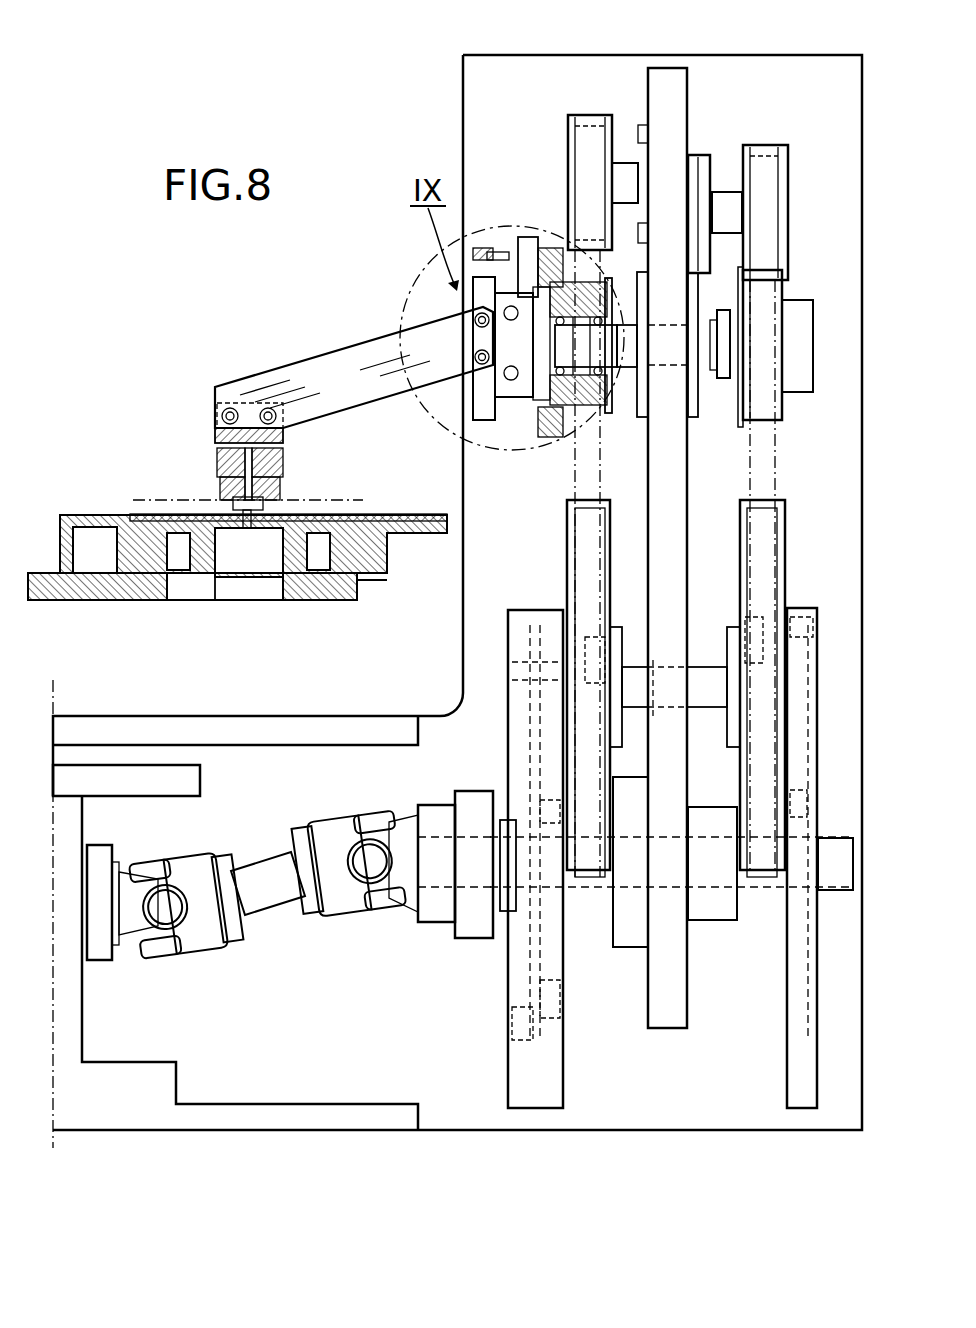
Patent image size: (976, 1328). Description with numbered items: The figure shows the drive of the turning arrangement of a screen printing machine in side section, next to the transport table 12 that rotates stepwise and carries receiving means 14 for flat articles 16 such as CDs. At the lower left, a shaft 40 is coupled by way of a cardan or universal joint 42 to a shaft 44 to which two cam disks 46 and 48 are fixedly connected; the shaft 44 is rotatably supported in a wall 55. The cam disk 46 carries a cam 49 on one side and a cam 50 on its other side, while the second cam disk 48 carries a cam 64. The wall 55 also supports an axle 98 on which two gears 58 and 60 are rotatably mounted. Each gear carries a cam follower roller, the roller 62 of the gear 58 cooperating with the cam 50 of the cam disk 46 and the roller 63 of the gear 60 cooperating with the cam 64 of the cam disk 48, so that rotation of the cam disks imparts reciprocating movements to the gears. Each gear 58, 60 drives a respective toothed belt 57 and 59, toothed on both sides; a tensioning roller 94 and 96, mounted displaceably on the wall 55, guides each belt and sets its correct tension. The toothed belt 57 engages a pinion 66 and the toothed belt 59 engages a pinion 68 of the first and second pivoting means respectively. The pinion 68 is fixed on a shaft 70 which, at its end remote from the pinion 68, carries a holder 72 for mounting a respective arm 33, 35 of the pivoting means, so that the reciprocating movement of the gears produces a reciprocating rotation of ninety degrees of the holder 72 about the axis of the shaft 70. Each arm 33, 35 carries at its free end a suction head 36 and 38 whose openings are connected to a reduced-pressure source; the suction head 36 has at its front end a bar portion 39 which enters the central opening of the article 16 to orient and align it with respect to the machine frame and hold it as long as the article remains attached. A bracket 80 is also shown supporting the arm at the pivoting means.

The transport table 12 is at (367, 565).
The receiving means 14 is at (123, 516).
The article 16 is at (152, 497).
The arm 33 is at (354, 359).
The arm 35 is at (352, 358).
The suction head 36 is at (201, 431).
The suction head 38 is at (216, 468).
The bar portion 39 is at (238, 512).
The shaft 40 is at (122, 927).
The universal joint 42 is at (280, 891).
The shaft 44 is at (500, 871).
The cam disk 46 is at (508, 1090).
The cam disk 48 is at (787, 1078).
The cam 49 is at (512, 1025).
The cam 50 is at (548, 1005).
The wall 55 is at (677, 95).
The toothed belt 57 is at (572, 470).
The gear 58 is at (567, 549).
The toothed belt 59 is at (778, 463).
The gear 60 is at (785, 562).
The cam follower roller 62 is at (552, 805).
The cam follower roller 63 is at (808, 790).
The cam 64 is at (800, 637).
The pinion 66 is at (600, 395).
The pinion 68 is at (740, 412).
The shaft 70 is at (665, 372).
The holder 72 is at (437, 263).
The bracket 80 is at (478, 413).
The tensioning roller 94 is at (568, 147).
The tensioning roller 96 is at (777, 172).
The axle 98 is at (700, 683).